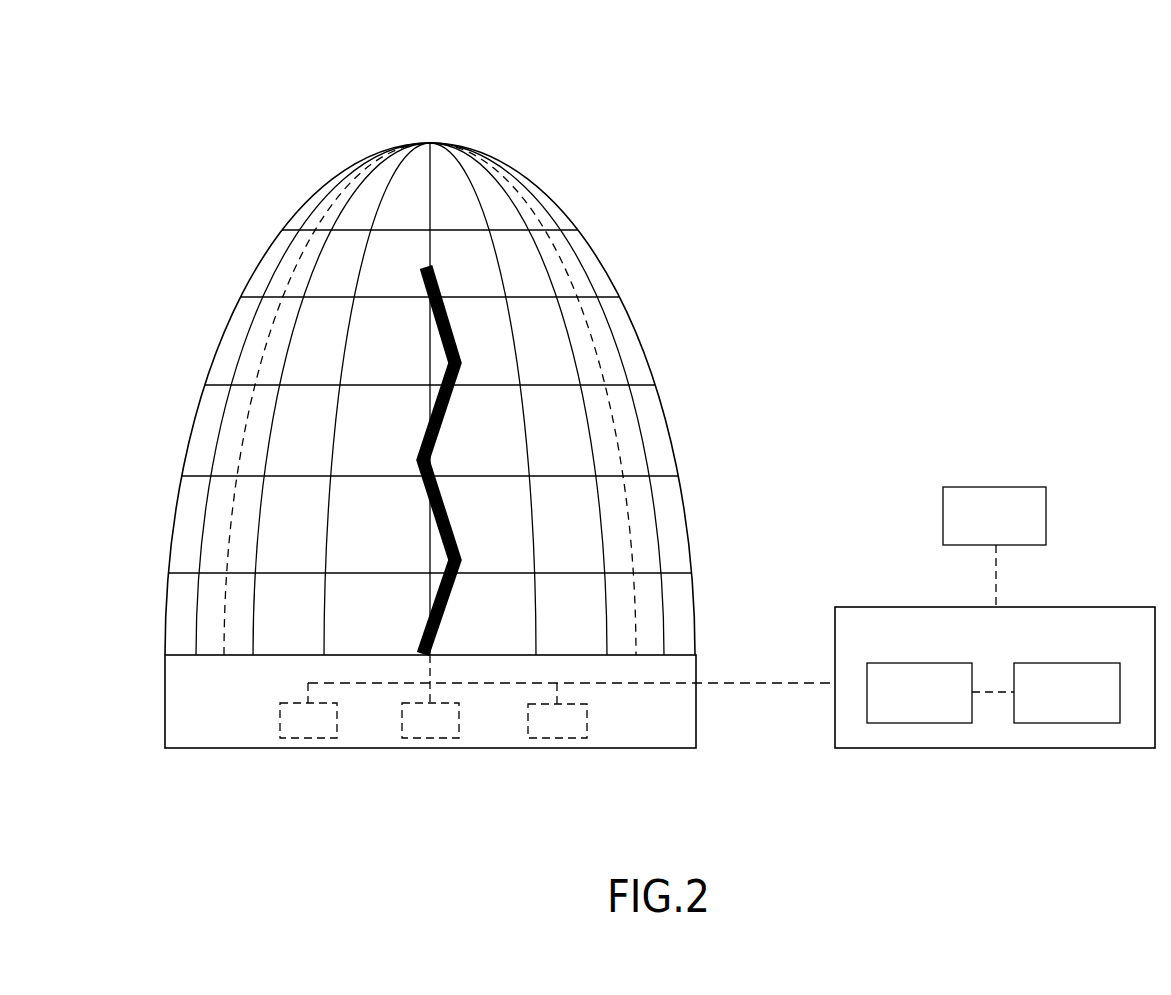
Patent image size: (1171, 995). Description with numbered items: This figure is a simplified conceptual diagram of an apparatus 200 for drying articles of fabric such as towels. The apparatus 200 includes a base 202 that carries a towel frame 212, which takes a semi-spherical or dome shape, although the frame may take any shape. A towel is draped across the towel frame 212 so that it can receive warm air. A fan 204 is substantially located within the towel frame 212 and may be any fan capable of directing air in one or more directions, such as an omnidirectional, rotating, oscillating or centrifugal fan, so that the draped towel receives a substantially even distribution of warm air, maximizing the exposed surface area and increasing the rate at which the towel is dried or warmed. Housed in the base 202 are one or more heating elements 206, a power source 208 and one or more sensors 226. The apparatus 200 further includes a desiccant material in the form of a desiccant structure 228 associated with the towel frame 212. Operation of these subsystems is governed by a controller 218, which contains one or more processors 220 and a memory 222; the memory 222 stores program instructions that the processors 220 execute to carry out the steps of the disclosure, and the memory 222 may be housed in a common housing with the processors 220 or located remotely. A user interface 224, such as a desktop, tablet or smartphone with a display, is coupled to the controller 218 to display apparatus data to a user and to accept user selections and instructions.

The apparatus 200 is at (231, 93).
The base 202 is at (430, 701).
The fan 204 is at (442, 438).
The heating elements 206 is at (327, 731).
The power source 208 is at (449, 731).
The towel frame 212 is at (262, 257).
The controller 218 is at (878, 634).
The processors 220 is at (938, 702).
The memory 222 is at (1086, 702).
The user interface 224 is at (1013, 526).
The sensors 226 is at (576, 731).
The desiccant structure 228 is at (598, 337).